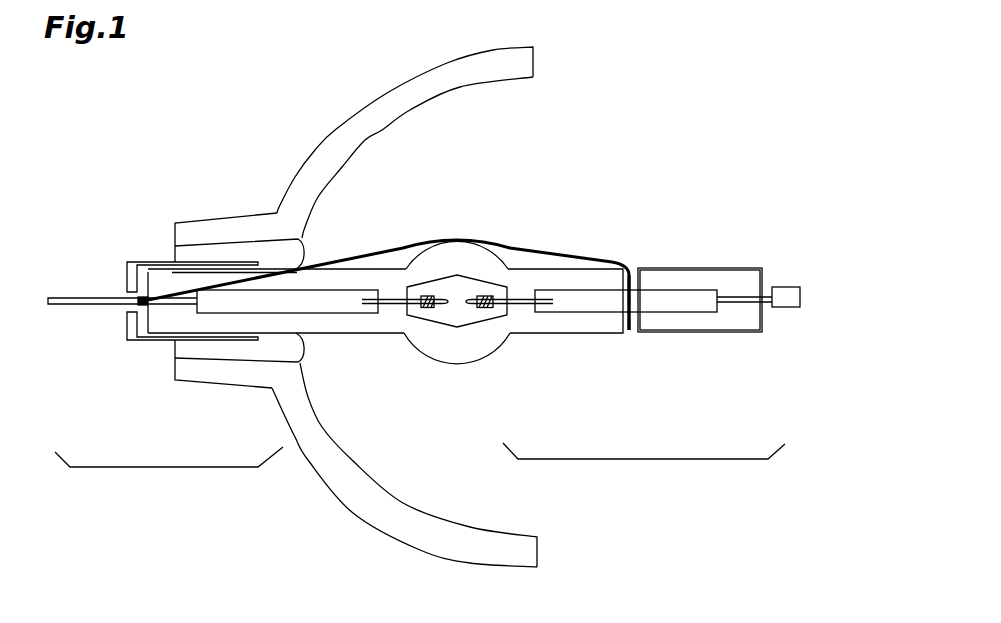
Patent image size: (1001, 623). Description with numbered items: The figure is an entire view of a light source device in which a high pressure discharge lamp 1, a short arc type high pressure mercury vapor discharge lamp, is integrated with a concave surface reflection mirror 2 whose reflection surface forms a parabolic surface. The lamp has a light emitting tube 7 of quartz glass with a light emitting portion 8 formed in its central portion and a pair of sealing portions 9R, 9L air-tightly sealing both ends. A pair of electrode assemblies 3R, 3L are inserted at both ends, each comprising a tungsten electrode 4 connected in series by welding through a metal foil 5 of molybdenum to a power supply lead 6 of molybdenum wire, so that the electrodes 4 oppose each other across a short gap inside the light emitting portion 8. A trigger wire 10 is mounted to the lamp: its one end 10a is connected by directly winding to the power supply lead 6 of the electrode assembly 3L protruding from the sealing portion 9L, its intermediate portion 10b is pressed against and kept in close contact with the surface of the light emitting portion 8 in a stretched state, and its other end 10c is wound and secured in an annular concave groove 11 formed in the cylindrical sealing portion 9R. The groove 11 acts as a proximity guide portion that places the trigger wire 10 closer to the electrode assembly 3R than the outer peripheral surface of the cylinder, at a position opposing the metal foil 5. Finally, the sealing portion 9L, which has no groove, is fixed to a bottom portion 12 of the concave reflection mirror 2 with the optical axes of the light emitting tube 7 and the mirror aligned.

The high pressure discharge lamp 1 is at (583, 233).
The concave surface reflection mirror 2 is at (353, 100).
The electrode assembly 3L is at (169, 477).
The electrode assembly 3R is at (644, 474).
The tungsten electrode 4 is at (405, 307).
The metal foil 5 is at (238, 303).
The power supply lead 6 is at (83, 305).
The light emitting tube 7 is at (428, 363).
The light emitting portion 8 is at (465, 347).
The sealing portion 9L is at (175, 273).
The sealing portion 9R is at (700, 270).
The trigger wire 10 is at (518, 242).
The one end of the trigger wire 10a is at (133, 295).
The intermediate portion of the trigger wire 10b is at (393, 248).
The other end of the trigger wire 10c is at (631, 271).
The annular concave groove 11 is at (634, 337).
The bottom portion 12 is at (272, 242).